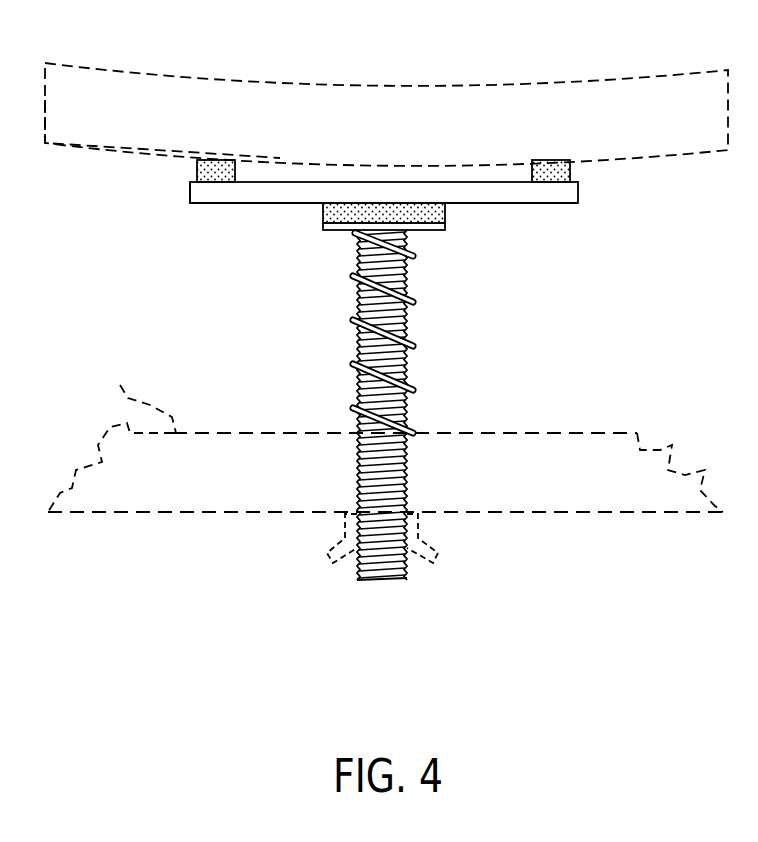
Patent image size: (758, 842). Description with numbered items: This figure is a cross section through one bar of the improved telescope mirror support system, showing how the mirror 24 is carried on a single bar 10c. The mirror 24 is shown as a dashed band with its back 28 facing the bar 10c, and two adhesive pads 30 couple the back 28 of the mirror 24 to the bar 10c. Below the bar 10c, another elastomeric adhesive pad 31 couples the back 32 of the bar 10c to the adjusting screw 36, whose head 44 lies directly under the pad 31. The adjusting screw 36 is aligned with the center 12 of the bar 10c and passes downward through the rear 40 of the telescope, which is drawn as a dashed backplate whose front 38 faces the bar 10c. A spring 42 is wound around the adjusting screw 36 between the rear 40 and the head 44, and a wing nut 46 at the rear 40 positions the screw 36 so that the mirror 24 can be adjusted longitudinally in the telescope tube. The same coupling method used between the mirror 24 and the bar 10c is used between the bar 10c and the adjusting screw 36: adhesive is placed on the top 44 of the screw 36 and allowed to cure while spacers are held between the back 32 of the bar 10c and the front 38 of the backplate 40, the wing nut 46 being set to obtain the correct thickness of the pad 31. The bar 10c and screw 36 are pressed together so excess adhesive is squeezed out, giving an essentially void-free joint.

The mirror 24 is at (697, 132).
The back of the mirror 28 is at (80, 149).
The center of the bar 12 is at (388, 181).
The adhesive pads 30 is at (215, 166).
The adhesive pad 31 is at (375, 210).
The head of the adjustment screw 44 is at (415, 227).
The bar 10c is at (220, 192).
The back of the bar 32 is at (271, 204).
The adjusting screw 36 is at (405, 380).
The spring 42 is at (355, 318).
The front of the telescope backplate 38 is at (342, 434).
The rear of the telescope (backplate) 40 is at (595, 468).
The wing nut 46 is at (412, 520).